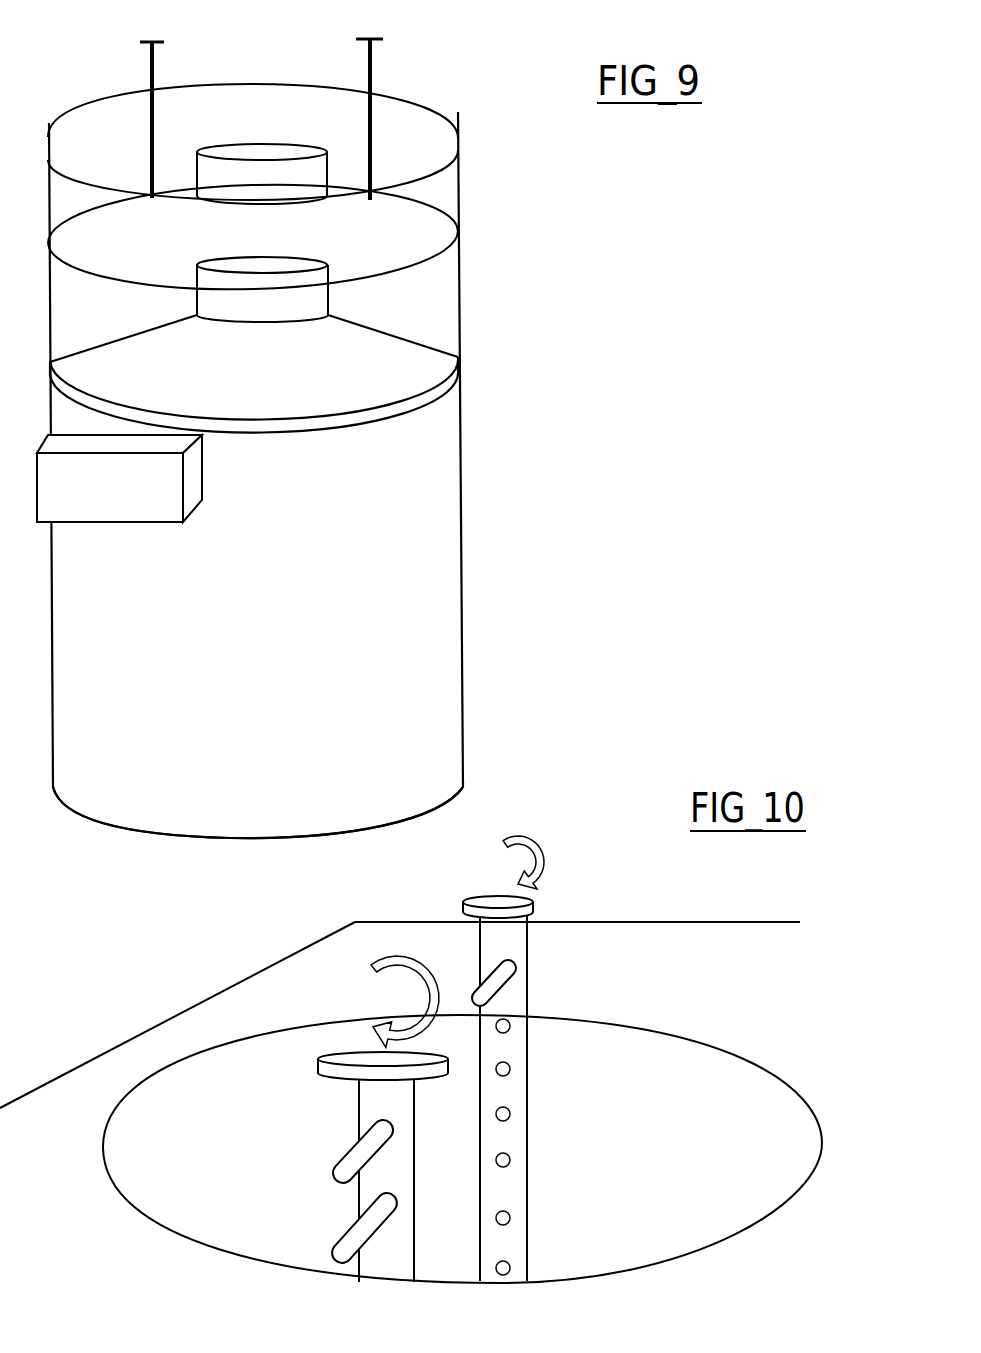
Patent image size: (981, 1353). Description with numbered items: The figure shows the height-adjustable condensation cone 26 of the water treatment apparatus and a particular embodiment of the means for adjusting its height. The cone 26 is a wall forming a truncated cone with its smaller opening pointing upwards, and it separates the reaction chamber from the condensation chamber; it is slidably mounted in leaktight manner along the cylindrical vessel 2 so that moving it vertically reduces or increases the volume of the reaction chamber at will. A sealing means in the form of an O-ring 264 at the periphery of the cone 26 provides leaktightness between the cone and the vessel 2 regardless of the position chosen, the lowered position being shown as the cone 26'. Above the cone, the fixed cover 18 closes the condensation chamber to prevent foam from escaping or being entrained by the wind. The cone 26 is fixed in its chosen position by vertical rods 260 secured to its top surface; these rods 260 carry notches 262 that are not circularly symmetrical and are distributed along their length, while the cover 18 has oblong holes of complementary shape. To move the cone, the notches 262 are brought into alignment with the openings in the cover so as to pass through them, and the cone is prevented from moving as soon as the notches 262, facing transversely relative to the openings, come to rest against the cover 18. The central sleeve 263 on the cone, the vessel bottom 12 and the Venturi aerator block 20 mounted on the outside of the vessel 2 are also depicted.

In FIG. 9, the cylindrical vessel 2 is at (256, 475).
In FIG. 9, the vessel bottom 12 is at (130, 830).
In FIG. 9, the cover 18 is at (203, 110).
In FIG. 9, the Venturi aerator block 20 is at (130, 497).
In FIG. 9, the condensation cone 26 is at (291, 224).
In FIG. 9, the plate in lowered position 26' is at (254, 388).
In FIG. 9, the central hub sleeve 263 is at (233, 152).
In FIG. 9, the O-ring 264 is at (414, 418).
In FIG. 9, the vertical rods 260 is at (147, 77).
In FIG. 10, the vertical rods 260 is at (513, 940).
In FIG. 10, the notches 262 is at (522, 982).